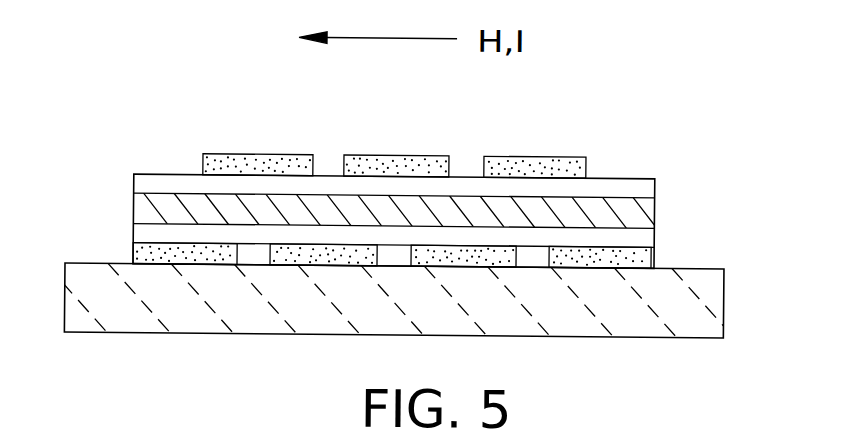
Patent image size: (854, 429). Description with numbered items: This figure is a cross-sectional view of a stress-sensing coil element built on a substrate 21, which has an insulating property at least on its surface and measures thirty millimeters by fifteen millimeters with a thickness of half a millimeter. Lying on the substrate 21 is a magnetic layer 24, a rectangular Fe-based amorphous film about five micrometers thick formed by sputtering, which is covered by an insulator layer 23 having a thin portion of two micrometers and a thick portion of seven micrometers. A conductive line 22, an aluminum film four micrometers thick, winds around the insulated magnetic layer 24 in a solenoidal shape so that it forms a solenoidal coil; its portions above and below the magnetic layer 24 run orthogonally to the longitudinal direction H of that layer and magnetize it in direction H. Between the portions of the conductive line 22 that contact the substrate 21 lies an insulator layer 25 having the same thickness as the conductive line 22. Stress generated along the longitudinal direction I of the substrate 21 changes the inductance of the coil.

The substrate 21 is at (690, 321).
The conductive line 22 is at (587, 160).
The insulator layer 23 is at (647, 184).
The magnetic layer 24 is at (140, 208).
The insulator layer 25 is at (537, 258).